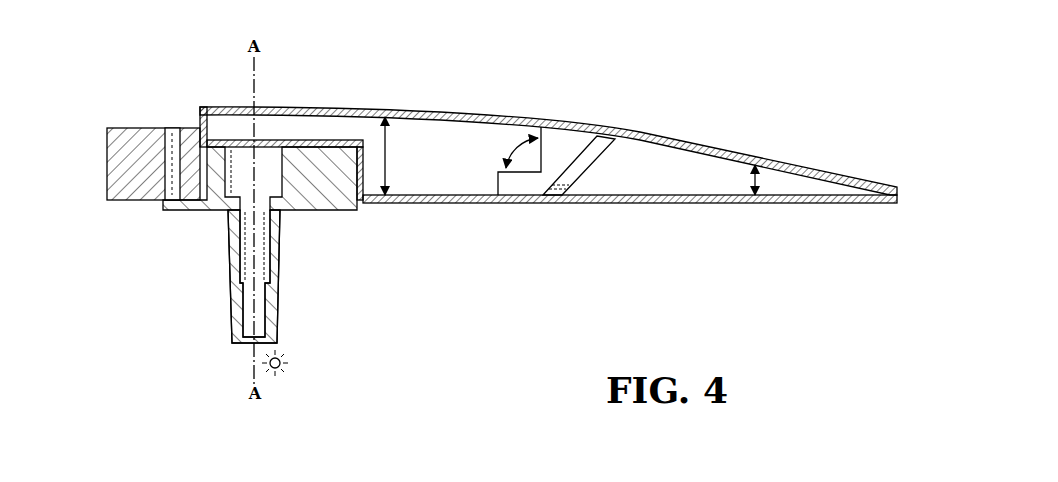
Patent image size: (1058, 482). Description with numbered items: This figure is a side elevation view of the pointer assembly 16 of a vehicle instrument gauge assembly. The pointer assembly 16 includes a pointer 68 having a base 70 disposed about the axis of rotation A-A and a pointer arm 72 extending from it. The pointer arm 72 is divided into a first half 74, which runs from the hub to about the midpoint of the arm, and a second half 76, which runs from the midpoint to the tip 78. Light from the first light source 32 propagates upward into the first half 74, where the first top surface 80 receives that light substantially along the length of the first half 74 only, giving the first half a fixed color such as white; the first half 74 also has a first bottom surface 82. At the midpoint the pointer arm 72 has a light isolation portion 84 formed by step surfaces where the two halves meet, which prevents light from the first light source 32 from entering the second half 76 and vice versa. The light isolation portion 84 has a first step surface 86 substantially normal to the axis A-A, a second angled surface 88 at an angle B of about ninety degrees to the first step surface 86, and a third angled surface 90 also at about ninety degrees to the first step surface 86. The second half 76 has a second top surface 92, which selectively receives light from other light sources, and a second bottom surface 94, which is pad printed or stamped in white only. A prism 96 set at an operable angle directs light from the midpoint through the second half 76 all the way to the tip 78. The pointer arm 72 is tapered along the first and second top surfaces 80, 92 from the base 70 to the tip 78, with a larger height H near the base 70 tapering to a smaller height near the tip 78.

The pointer assembly 16 is at (427, 68).
The first light source 32 is at (283, 363).
The pointer 68 is at (494, 141).
The base 70 is at (228, 123).
The pointer arm 72 is at (670, 160).
The first half 74 is at (393, 206).
The second half 76 is at (712, 206).
The tip 78 is at (901, 187).
The first top surface 80 is at (478, 112).
The first bottom surface 82 is at (430, 203).
The light isolation portion 84 is at (539, 180).
The first step surface 86 is at (507, 173).
The second angled surface 88 is at (581, 131).
The third angled surface 90 is at (498, 183).
The second top surface 92 is at (783, 170).
The second bottom surface 94 is at (815, 203).
The prism 96 is at (580, 177).